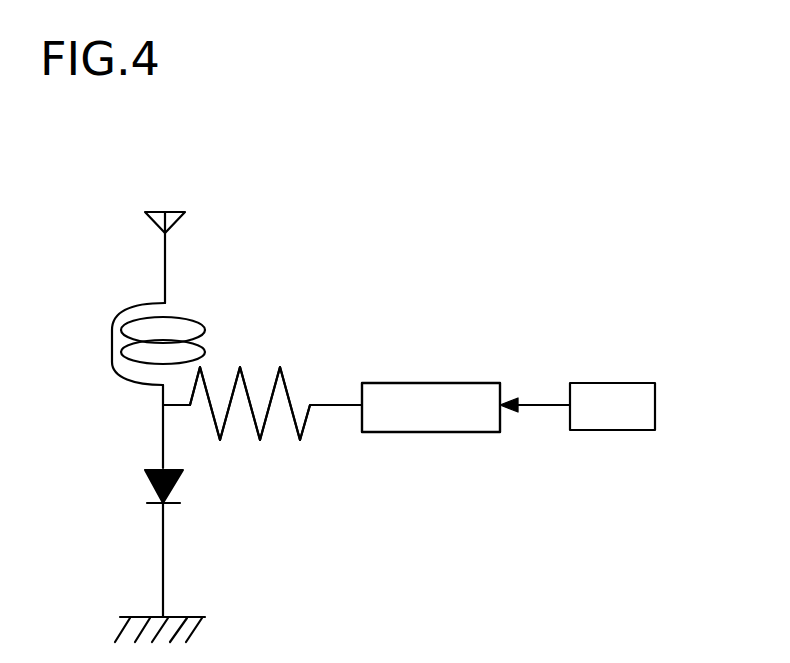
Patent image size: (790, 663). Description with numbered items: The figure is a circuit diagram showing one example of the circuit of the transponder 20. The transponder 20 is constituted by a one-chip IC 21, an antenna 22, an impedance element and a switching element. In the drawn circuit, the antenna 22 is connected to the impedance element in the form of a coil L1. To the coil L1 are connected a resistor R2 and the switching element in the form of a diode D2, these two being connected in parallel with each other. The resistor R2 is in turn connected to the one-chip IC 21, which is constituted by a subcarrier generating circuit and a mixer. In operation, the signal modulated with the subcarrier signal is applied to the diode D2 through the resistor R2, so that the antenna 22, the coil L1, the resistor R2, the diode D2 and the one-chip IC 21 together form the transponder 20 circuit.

The transponder 20 is at (443, 178).
The one-chip IC 21 is at (428, 383).
The antenna 22 is at (167, 252).
The coil L1 is at (187, 319).
The resistor R2 is at (260, 440).
The diode D2 is at (177, 487).